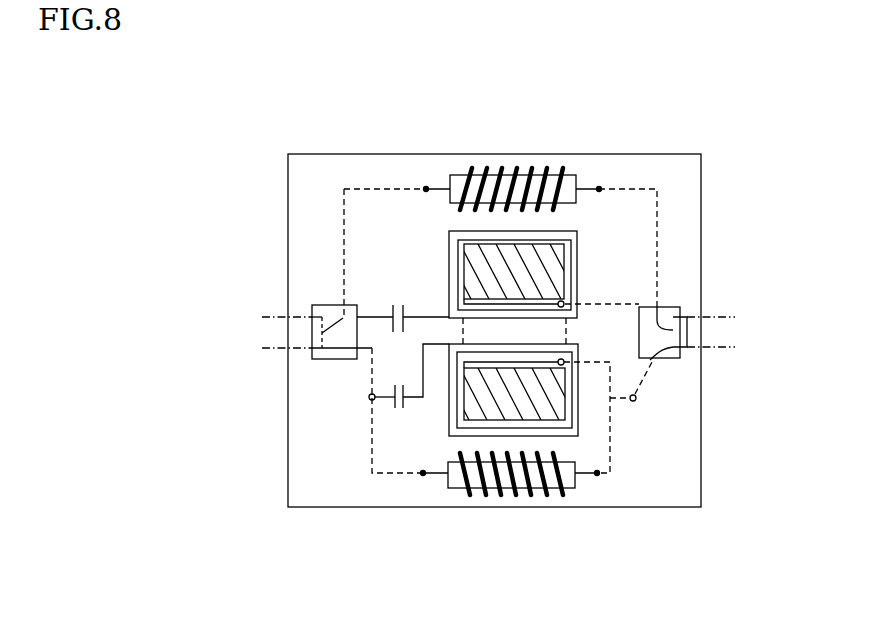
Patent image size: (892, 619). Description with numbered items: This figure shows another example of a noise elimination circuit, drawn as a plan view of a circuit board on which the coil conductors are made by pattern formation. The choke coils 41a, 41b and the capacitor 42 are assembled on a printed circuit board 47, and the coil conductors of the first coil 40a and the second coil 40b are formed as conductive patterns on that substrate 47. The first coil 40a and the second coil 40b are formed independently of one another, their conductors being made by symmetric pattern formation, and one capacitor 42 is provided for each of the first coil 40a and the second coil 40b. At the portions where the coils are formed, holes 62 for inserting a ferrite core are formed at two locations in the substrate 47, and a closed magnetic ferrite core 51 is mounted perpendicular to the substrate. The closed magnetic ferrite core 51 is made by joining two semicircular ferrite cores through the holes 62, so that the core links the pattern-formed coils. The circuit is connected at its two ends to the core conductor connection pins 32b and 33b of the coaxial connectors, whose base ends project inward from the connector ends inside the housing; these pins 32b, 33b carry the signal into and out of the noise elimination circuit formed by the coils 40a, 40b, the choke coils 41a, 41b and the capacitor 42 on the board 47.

The printed circuit board 47 is at (659, 154).
The choke coil 41a is at (489, 170).
The choke coil 41b is at (492, 488).
The first coil 40a is at (455, 286).
The second coil 40b is at (453, 407).
The hole for inserting a ferrite core 62 is at (473, 257).
The capacitor 42 is at (395, 337).
The core conductor connection pin 32b is at (278, 347).
The core conductor connection pin 33b is at (722, 350).
The closed magnetic ferrite core 51 is at (566, 330).